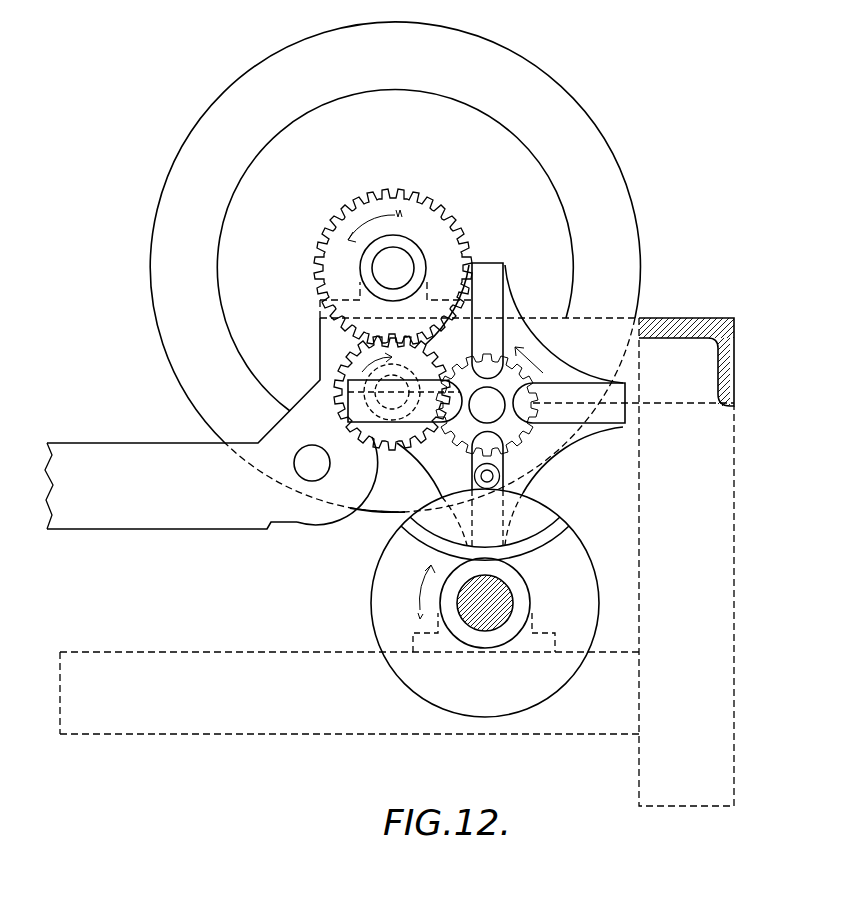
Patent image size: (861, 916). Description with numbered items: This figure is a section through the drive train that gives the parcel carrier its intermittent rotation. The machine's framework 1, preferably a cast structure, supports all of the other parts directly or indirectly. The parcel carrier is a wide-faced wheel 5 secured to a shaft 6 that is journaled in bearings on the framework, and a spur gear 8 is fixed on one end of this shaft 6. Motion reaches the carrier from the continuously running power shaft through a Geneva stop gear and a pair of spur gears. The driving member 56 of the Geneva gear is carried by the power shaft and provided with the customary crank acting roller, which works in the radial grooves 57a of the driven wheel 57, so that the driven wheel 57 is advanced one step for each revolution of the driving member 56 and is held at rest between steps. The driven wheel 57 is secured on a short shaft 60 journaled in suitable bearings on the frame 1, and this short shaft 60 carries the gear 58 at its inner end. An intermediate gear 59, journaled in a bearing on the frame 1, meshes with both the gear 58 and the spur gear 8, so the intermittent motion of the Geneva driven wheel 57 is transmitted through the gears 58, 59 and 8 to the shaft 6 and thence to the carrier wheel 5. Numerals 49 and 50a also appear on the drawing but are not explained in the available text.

The framework 1 is at (212, 511).
The wide-faced wheel 5 is at (597, 152).
The shaft 6 is at (407, 263).
The spur gear 8 is at (338, 267).
The shaft hub 49 is at (537, 593).
The cam segment 50a is at (562, 504).
The driving member 56 is at (558, 570).
The driven wheel 57 is at (548, 500).
The radial grooves 57a is at (563, 397).
The gear 58 is at (540, 454).
The intermediate gear 59 is at (345, 378).
The short shaft 60 is at (352, 481).